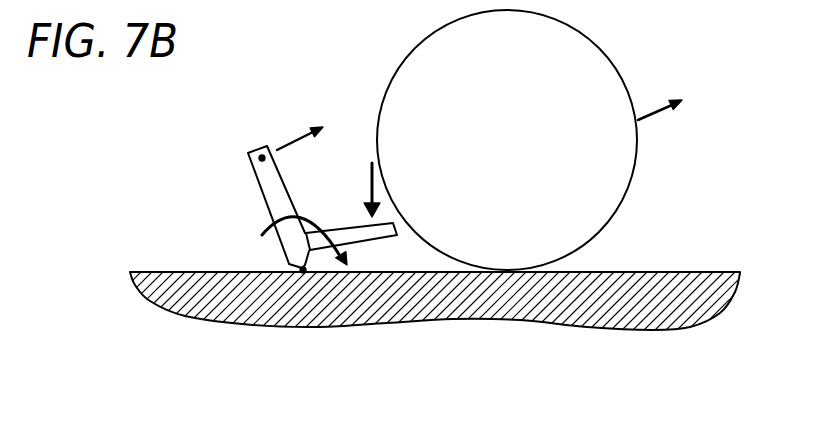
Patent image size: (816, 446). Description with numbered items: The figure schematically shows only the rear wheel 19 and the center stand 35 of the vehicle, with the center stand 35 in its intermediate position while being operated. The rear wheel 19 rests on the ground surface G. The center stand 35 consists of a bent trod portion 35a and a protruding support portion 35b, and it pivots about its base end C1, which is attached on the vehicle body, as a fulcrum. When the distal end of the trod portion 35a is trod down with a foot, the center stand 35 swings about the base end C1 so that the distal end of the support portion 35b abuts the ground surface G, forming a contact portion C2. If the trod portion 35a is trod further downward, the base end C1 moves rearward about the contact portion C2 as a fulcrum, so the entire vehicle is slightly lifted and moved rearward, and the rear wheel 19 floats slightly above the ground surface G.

The rear wheel 19 is at (603, 70).
The ground surface G is at (668, 272).
The center stand 35 is at (352, 281).
The trod portion 35a is at (387, 233).
The support portion 35b is at (302, 262).
The base end C1 is at (261, 156).
The contact portion C2 is at (303, 271).